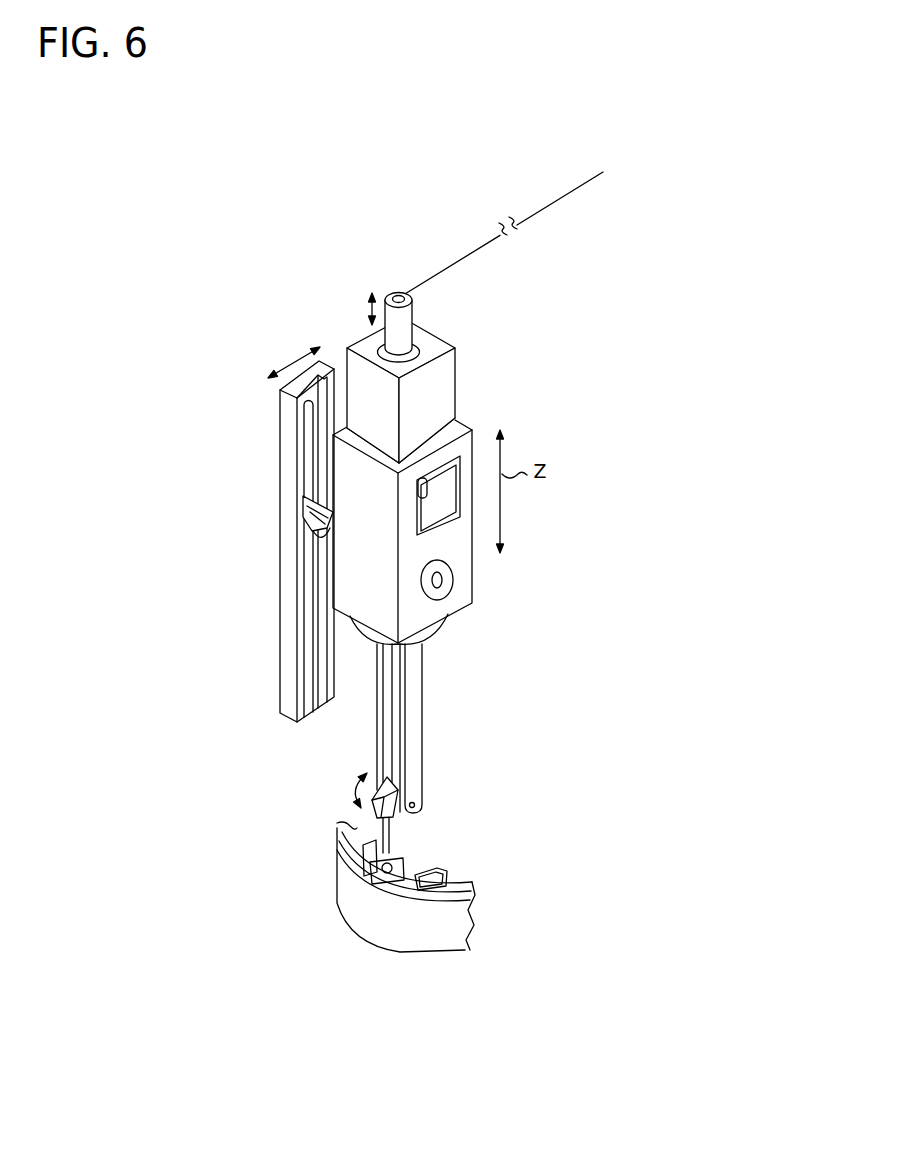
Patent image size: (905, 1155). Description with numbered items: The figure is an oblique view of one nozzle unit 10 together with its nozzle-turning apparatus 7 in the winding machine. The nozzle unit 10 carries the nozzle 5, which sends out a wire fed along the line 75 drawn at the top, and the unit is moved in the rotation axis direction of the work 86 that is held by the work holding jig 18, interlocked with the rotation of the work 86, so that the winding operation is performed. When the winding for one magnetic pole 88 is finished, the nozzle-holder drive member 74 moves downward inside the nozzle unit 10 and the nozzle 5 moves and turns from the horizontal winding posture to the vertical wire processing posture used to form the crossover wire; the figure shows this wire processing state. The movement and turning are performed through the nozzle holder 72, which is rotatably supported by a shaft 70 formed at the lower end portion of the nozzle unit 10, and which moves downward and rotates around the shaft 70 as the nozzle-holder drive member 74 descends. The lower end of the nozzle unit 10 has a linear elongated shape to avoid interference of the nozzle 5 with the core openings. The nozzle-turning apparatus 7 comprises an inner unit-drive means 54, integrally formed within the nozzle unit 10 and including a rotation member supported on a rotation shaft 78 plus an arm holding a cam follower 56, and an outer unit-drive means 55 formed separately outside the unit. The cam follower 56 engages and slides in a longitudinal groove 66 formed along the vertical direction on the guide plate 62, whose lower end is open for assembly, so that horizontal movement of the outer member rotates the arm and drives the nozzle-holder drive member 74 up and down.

The nozzle 5 is at (395, 831).
The nozzle-turning apparatus 7 is at (258, 641).
The nozzle unit 10 is at (458, 393).
The work holding jig 18 is at (378, 923).
The inner unit-drive means 54 is at (316, 537).
The outer unit-drive means 55 is at (275, 468).
The cam follower 56 is at (302, 501).
The guide plate 62 is at (280, 500).
The longitudinal groove 66 is at (303, 670).
The shaft 70 is at (412, 805).
The nozzle holder 72 is at (390, 787).
The nozzle-holder drive member 74 is at (404, 319).
The cable 75 is at (446, 262).
The rotation shaft 78 is at (447, 586).
The work 86 is at (452, 885).
The magnetic pole 88 is at (390, 858).